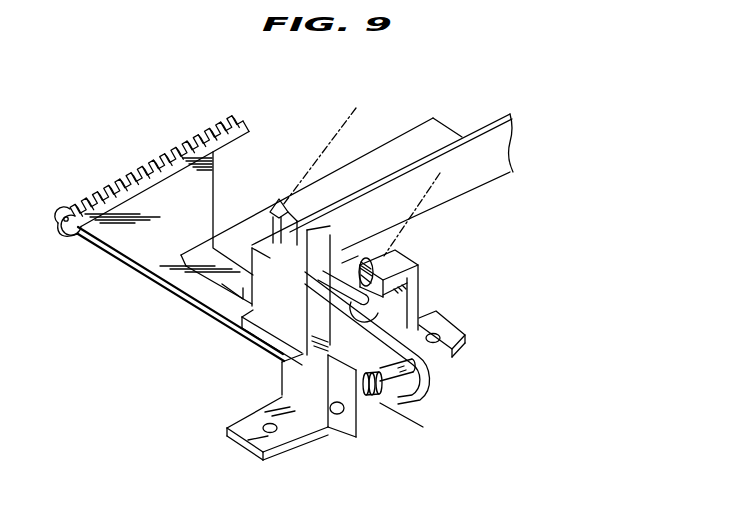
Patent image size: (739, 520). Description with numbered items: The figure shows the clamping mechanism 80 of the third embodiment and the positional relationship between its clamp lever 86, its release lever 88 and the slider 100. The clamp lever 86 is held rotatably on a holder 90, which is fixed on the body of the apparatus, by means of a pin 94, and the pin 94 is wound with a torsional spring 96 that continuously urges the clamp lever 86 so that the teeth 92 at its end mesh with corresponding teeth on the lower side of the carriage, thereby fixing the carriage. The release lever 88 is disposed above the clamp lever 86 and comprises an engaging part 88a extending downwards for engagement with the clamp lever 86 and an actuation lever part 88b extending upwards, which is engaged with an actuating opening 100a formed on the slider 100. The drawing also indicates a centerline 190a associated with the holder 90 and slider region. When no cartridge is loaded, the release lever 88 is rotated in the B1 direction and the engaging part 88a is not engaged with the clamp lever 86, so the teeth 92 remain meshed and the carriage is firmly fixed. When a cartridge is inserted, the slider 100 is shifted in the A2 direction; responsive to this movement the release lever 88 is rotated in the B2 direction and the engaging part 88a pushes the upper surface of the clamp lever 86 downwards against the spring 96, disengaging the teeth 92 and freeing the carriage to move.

The clamping mechanism 80 is at (334, 95).
The clamp lever 86 is at (157, 255).
The release lever 88 is at (250, 278).
The engaging part 88a is at (283, 363).
The actuation lever part 88b is at (283, 195).
The holder 90 is at (423, 272).
The teeth 92 is at (167, 152).
The pin 94 is at (420, 402).
The torsional spring 96 is at (377, 403).
The slider 100 is at (405, 150).
The actuating opening 100a is at (339, 150).
The axis of arm 190a is at (426, 222).
The A2 direction A2 is at (526, 78).
The B1 direction B1 is at (258, 273).
The B2 direction B2 is at (283, 266).